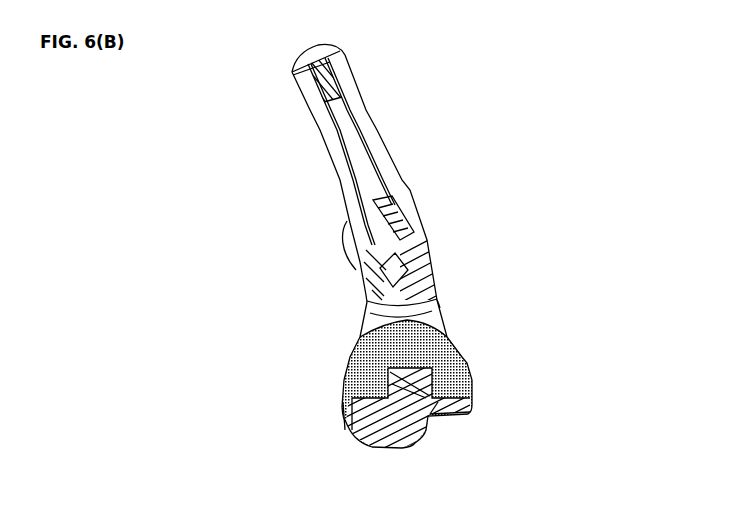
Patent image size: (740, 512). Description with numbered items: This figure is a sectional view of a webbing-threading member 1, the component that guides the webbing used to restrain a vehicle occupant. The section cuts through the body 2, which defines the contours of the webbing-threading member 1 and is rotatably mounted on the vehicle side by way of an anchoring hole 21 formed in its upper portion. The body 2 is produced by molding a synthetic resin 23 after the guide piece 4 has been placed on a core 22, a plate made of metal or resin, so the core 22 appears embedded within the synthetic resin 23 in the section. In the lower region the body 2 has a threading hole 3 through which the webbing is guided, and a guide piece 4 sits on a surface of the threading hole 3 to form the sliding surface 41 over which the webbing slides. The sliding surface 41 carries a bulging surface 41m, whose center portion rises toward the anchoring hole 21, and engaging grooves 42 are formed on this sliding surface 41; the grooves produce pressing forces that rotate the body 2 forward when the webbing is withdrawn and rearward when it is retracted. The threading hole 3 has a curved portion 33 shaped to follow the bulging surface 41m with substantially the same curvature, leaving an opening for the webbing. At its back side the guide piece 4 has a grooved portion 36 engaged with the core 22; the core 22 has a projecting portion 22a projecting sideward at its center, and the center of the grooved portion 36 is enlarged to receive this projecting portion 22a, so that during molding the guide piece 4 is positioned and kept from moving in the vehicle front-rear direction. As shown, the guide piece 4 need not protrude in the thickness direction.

The webbing-threading member 1 is at (450, 112).
The body 2 is at (403, 180).
The anchoring hole 21 is at (365, 147).
The core 22 is at (431, 253).
The projecting portion 22a is at (443, 422).
The synthetic resin 23 is at (352, 275).
The threading hole 3 is at (350, 310).
The curved portion 33 is at (440, 302).
The guide piece 4 is at (340, 358).
The sliding surface 41 is at (472, 374).
The bulging surface 41m is at (355, 333).
The engaging grooves 42 is at (447, 327).
The grooved portion 36 is at (466, 358).